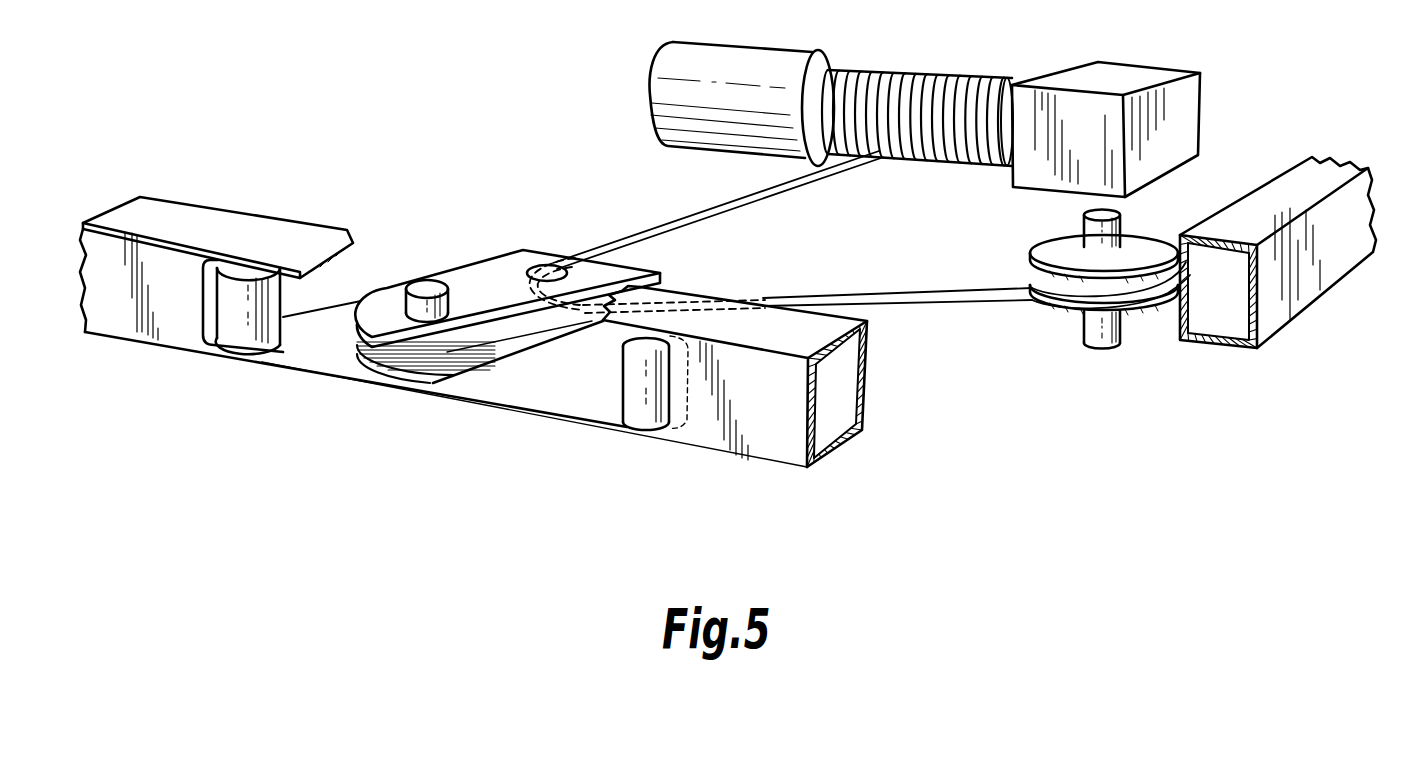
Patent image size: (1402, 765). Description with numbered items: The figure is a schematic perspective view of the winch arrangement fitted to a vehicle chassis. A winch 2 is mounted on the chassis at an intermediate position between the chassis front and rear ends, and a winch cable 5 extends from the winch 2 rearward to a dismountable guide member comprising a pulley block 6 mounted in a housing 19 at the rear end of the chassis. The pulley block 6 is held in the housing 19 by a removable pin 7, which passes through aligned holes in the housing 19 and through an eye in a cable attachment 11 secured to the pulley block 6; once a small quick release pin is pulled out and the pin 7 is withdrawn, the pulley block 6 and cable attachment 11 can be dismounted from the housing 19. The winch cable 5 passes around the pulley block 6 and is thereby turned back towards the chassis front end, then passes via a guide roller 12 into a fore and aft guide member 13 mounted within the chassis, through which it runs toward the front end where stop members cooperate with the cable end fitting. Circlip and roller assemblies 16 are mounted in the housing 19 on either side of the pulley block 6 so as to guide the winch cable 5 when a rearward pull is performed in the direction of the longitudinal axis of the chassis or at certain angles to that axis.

The winch 2 is at (873, 70).
The winch cable 5 is at (630, 222).
The pulley block 6 is at (548, 268).
The removable pin 7 is at (420, 284).
The cable attachment 11 is at (478, 262).
The guide roller 12 is at (1133, 313).
The fore and aft guide member 13 is at (1283, 290).
The circlip and roller assemblies 16 is at (242, 328).
The housing 19 is at (778, 442).